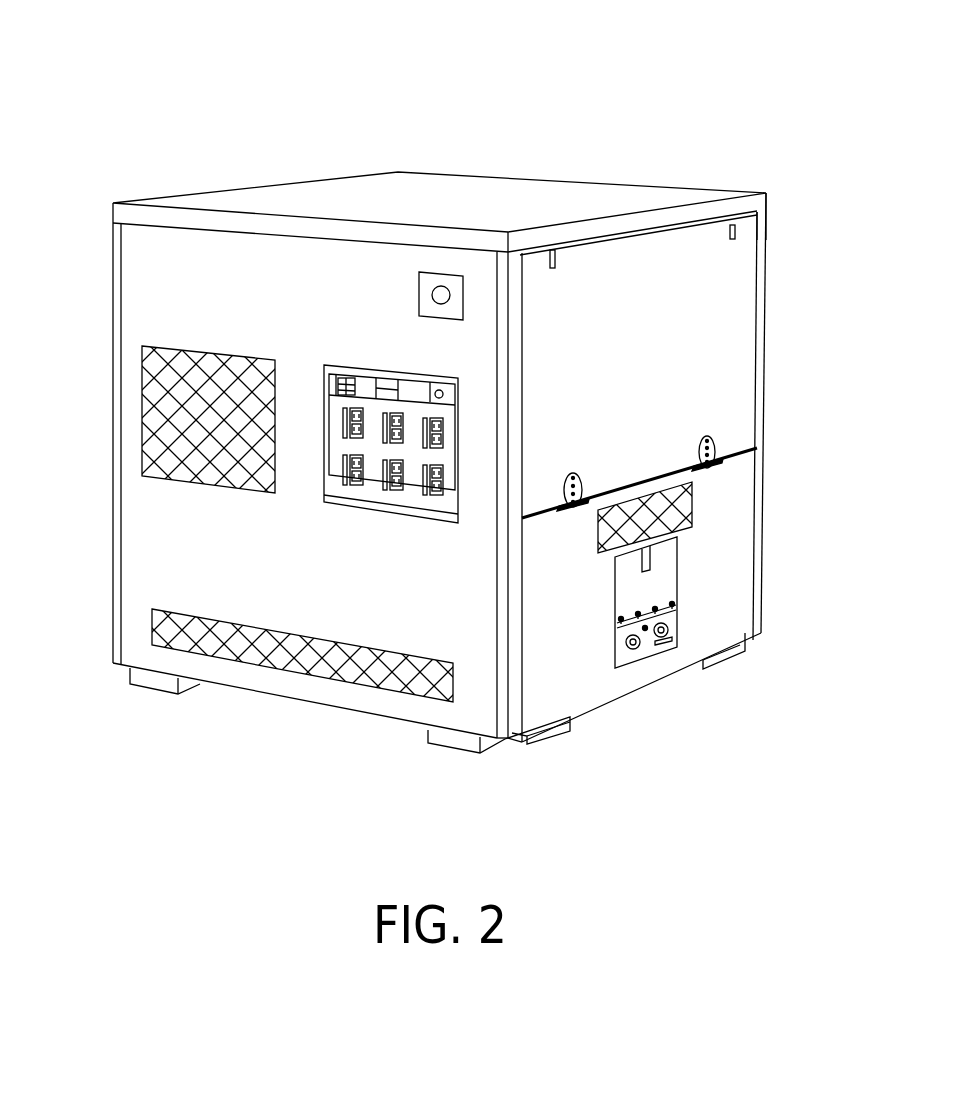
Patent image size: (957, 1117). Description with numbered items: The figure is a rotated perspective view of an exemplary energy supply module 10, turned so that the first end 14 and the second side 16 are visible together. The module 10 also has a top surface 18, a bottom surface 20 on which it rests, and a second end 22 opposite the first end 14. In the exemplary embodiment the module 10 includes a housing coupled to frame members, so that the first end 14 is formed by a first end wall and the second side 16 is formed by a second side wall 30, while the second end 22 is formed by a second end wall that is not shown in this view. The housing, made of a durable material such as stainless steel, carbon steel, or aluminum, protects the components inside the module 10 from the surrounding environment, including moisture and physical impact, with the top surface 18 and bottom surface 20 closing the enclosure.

The energy supply module 10 is at (212, 82).
The first end 14 is at (170, 499).
The second side 16 is at (738, 558).
The top surface 18 is at (176, 196).
The bottom surface 20 is at (600, 716).
The second end 22 is at (782, 186).
The second side wall 30 is at (740, 491).